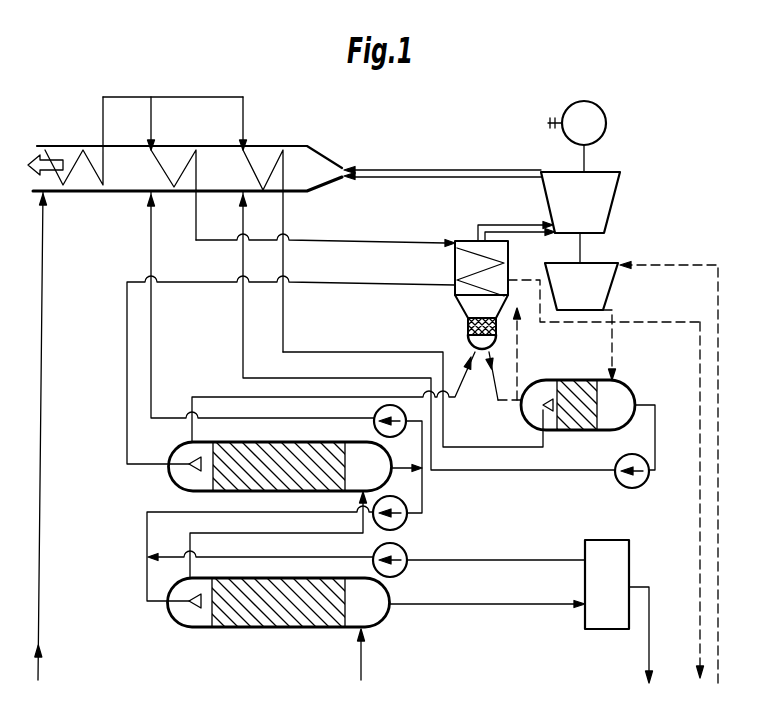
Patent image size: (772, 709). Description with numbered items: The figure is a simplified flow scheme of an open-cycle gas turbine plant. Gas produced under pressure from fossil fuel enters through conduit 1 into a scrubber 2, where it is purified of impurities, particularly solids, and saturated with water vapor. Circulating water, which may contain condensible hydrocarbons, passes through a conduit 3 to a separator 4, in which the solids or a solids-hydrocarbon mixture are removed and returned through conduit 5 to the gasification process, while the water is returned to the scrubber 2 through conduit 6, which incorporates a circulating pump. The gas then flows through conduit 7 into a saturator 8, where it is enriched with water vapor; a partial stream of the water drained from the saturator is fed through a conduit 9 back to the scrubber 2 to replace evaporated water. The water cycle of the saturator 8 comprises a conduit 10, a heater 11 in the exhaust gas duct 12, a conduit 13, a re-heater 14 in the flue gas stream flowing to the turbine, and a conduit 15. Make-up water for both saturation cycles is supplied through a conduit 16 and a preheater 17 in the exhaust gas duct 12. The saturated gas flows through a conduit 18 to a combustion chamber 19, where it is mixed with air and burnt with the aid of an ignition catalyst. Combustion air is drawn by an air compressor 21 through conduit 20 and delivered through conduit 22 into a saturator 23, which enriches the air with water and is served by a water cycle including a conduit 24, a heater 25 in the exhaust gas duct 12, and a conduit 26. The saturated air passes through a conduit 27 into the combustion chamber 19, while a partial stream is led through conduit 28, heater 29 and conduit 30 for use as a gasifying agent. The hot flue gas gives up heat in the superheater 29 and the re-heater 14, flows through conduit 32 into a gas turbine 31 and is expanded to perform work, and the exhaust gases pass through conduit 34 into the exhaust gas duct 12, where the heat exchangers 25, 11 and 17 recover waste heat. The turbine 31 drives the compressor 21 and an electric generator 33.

The conduit 1 is at (368, 654).
The scrubber 2 is at (276, 602).
The conduit 3 is at (487, 592).
The separator 4 is at (607, 584).
The conduit 5 is at (641, 635).
The conduit 6 is at (366, 555).
The conduit 7 is at (278, 535).
The saturator 8 is at (278, 466).
The conduit 9 is at (277, 539).
The conduit 10 is at (285, 352).
The heater 11 is at (172, 168).
The exhaust gas duct 12 is at (185, 144).
The conduit 13 is at (325, 236).
The re-heater 14 is at (468, 279).
The conduit 15 is at (291, 361).
The conduit 16 is at (53, 435).
The preheater 17 is at (74, 141).
The conduit 18 is at (403, 330).
The combustion chamber 19 is at (471, 336).
The conduit 20 is at (669, 461).
The air compressor 21 is at (581, 271).
The conduit 22 is at (600, 345).
The saturator 23 is at (572, 405).
The conduit 24 is at (613, 446).
The heater 25 is at (262, 224).
The conduit 26 is at (413, 386).
The conduit 27 is at (503, 376).
The conduit 28 is at (530, 354).
The heater 29 is at (604, 301).
The conduit 30 is at (684, 500).
The gas turbine 31 is at (580, 202).
The conduit 32 is at (516, 218).
The electric generator 33 is at (577, 124).
The conduit 34 is at (443, 160).